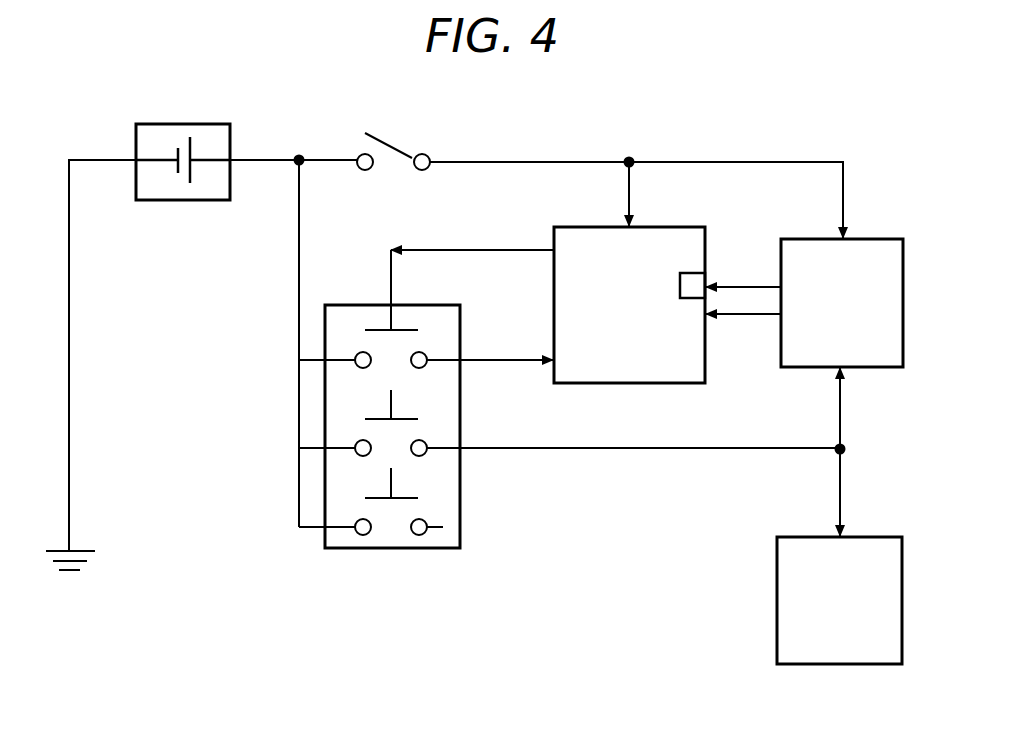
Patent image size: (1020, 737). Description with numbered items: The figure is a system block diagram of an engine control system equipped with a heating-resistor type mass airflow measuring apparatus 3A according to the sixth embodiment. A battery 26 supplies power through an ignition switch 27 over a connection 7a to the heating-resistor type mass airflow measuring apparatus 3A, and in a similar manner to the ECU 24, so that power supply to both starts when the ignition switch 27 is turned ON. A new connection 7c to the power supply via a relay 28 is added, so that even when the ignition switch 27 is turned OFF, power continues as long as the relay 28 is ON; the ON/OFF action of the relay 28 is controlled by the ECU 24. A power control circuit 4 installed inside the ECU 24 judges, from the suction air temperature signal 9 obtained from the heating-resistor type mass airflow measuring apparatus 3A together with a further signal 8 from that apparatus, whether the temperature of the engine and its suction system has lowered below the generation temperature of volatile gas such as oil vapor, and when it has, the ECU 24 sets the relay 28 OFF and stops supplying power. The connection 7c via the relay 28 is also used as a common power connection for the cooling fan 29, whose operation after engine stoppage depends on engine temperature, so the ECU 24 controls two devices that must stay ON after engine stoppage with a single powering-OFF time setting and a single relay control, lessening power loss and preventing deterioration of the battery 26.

The battery 26 is at (190, 124).
The ignition switch 27 is at (387, 145).
The connection 7a is at (542, 162).
The ECU 24 is at (662, 227).
The power control circuit 4 is at (692, 273).
The suction air temperature signal 9 is at (738, 283).
The signal line 8 is at (742, 318).
The heating-resistor type mass airflow measuring apparatus 3A is at (877, 239).
The cooling fan 29 is at (878, 537).
The relay 28 is at (385, 548).
The connection 7c is at (622, 449).